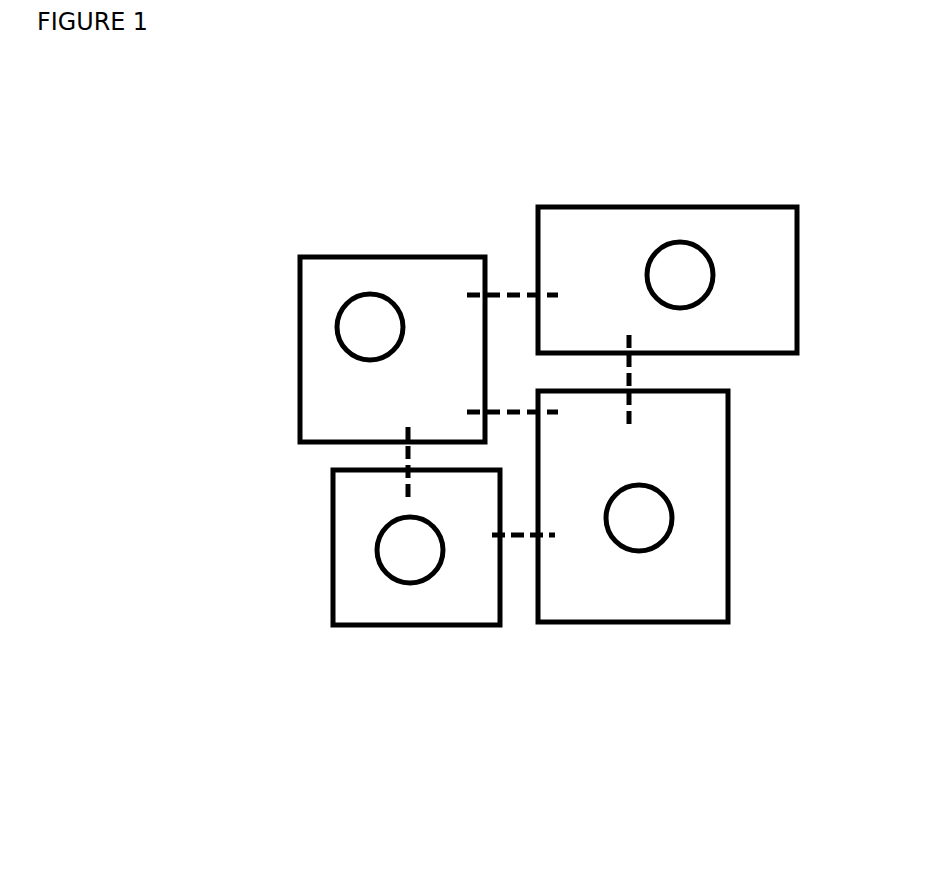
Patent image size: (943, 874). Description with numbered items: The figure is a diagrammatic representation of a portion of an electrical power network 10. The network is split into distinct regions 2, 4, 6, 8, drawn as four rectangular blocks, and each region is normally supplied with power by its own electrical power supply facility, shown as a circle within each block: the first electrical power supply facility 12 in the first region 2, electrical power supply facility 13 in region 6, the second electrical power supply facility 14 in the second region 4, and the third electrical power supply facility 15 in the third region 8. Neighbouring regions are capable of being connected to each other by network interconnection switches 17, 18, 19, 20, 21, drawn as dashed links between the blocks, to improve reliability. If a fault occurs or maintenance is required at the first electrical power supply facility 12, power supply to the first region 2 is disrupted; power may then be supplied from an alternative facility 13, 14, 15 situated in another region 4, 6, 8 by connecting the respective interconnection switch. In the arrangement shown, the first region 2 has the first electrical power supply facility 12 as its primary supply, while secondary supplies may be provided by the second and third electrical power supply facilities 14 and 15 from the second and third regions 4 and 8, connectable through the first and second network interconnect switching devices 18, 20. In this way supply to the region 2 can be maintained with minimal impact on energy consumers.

The electrical power network 10 is at (258, 140).
The first region 2 is at (382, 260).
The second region 4 is at (620, 207).
The region 6 is at (333, 513).
The third region 8 is at (732, 482).
The first electrical power supply facility 12 is at (370, 321).
The electrical power supply facility 13 is at (407, 552).
The second electrical power supply facility 14 is at (690, 272).
The third electrical power supply facility 15 is at (639, 518).
The network interconnection switch 17 is at (633, 363).
The first network interconnect switching device 18 is at (514, 290).
The network interconnection switch 19 is at (407, 458).
The second network interconnect switching device 20 is at (537, 417).
The network interconnection switch 21 is at (522, 538).